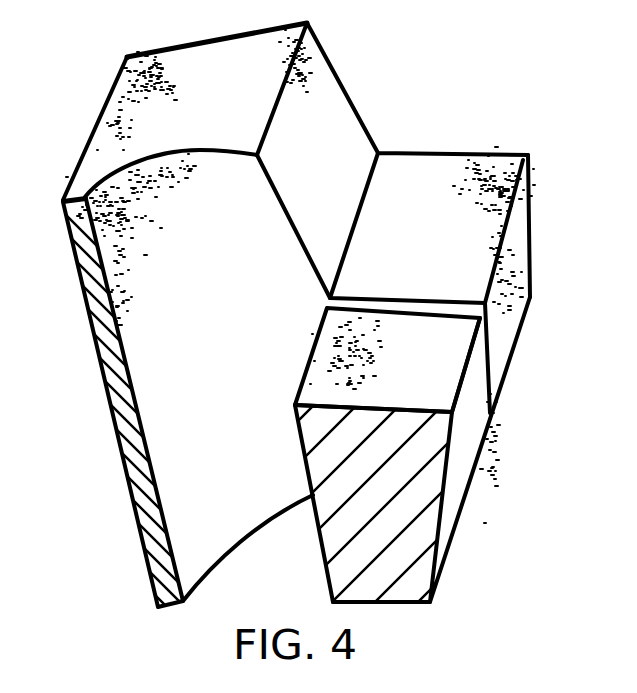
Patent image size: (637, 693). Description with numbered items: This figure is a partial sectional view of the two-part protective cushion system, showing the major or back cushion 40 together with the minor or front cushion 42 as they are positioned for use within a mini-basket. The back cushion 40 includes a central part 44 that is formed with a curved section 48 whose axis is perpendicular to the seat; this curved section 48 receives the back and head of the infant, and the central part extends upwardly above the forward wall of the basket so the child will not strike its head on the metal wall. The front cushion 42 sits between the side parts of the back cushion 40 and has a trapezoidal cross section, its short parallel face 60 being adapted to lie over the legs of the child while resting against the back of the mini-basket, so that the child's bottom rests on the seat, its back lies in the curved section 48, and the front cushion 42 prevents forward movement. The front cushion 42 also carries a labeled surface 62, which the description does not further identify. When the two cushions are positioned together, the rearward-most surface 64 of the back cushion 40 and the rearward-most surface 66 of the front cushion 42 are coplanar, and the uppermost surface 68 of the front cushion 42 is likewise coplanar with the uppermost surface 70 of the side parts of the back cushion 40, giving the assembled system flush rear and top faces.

The back cushion 40 is at (112, 95).
The front cushion 42 is at (452, 497).
The central part 44 is at (77, 197).
The curved section 48 is at (146, 345).
The short parallel face 60 is at (413, 603).
The seat surface 62 is at (430, 395).
The rearward-most surface of the back cushion 64 is at (524, 258).
The rearward-most surface of the front cushion 66 is at (483, 419).
The uppermost surface of the front cushion 68 is at (437, 342).
The uppermost surface of the side parts 70 is at (475, 168).